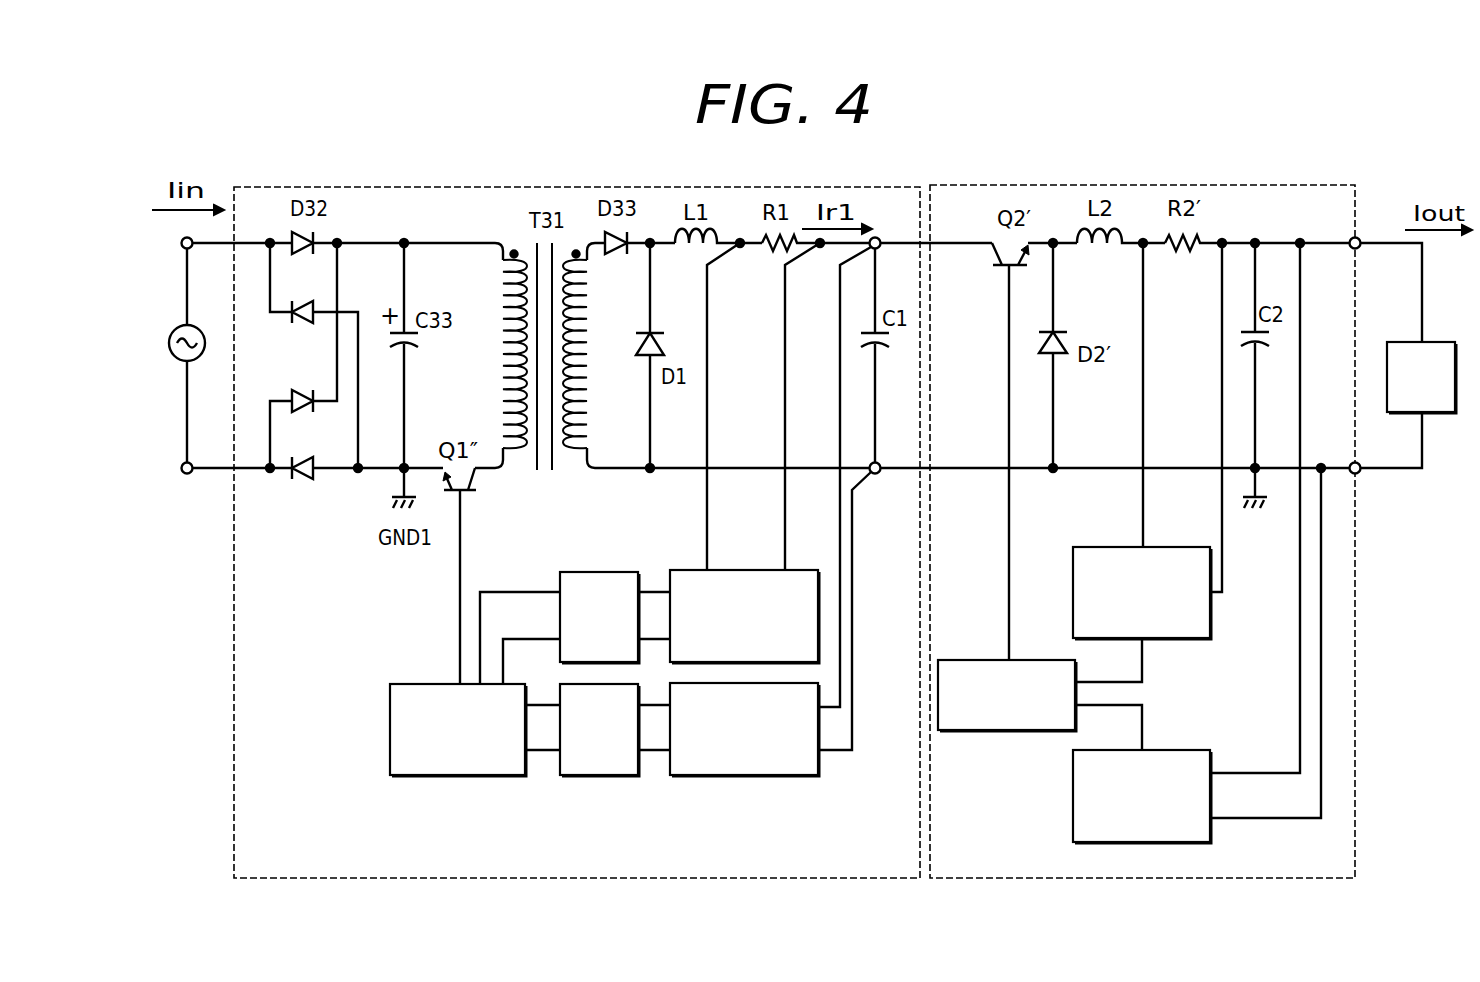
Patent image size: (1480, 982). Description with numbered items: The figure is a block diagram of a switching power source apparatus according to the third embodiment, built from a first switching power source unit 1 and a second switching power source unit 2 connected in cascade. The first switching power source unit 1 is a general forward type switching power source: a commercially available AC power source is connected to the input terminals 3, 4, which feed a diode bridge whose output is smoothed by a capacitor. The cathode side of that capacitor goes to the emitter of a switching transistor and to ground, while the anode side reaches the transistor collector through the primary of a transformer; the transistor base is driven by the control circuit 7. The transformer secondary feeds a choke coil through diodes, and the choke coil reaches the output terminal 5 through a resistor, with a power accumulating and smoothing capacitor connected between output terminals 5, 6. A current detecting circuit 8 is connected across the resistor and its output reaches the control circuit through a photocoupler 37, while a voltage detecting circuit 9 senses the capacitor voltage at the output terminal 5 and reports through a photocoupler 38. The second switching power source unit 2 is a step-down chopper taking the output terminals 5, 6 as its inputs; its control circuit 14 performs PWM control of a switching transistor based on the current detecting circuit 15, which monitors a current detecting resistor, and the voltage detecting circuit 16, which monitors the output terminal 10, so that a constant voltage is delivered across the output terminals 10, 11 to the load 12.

The first switching power source unit 1 is at (346, 187).
The second switching power source unit 2 is at (1322, 185).
The input terminal 3 is at (183, 246).
The input terminal 4 is at (183, 465).
The output terminal 5 is at (878, 238).
The output terminal 6 is at (878, 476).
The control circuit 7 is at (418, 684).
The current detecting circuit 8 is at (685, 570).
The voltage detecting circuit 9 is at (701, 775).
The output terminal 10 is at (1360, 239).
The output terminal 11 is at (1362, 473).
The load 12 is at (1432, 343).
The control circuit 14 is at (1012, 660).
The current detecting circuit 15 is at (1183, 638).
The voltage detecting circuit 16 is at (1073, 815).
The photocoupler 37 is at (574, 572).
The photocoupler 38 is at (580, 775).